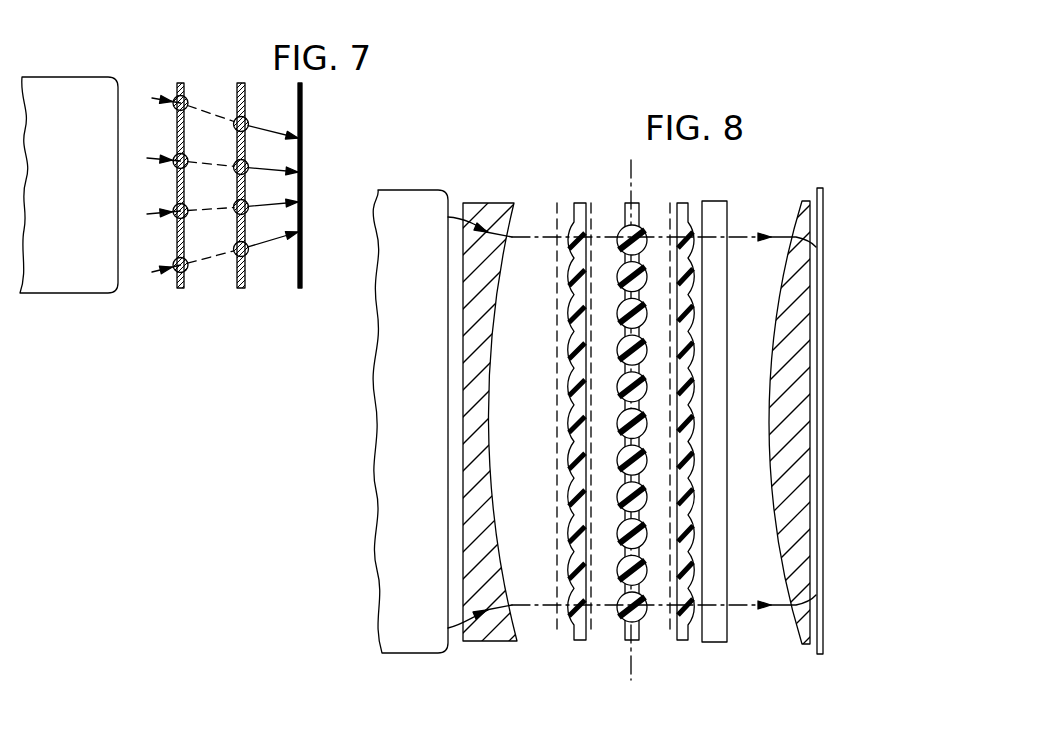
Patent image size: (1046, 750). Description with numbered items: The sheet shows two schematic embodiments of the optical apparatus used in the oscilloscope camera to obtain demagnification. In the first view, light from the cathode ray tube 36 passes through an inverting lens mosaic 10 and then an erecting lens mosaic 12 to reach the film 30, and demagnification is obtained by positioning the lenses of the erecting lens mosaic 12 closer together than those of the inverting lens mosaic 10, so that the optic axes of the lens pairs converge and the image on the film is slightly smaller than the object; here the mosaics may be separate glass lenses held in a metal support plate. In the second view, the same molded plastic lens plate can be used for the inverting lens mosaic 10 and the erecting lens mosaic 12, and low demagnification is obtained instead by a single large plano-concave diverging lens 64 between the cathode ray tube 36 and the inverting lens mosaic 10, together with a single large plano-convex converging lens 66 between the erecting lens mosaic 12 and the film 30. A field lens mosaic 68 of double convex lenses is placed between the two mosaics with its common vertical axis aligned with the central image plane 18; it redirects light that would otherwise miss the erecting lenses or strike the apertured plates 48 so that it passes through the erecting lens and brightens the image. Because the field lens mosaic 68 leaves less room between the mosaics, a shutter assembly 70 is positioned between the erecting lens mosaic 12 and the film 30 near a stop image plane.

In FIG. 7, the inverting lens mosaic 10 is at (181, 83).
In FIG. 8, the inverting lens mosaic 10 is at (579, 204).
In FIG. 7, the erecting lens mosaic 12 is at (240, 83).
In FIG. 8, the erecting lens mosaic 12 is at (680, 204).
In FIG. 8, the central image plane 18 is at (631, 184).
In FIG. 7, the film 30 is at (302, 111).
In FIG. 8, the film 30 is at (824, 297).
In FIG. 7, the cathode ray tube 36 is at (97, 293).
In FIG. 8, the cathode ray tube 36 is at (424, 657).
In FIG. 8, the apertured metal plates 48 is at (557, 632).
In FIG. 8, the diverging lens 64 is at (494, 204).
In FIG. 8, the converging lens 66 is at (778, 296).
In FIG. 8, the field lens mosaic 68 is at (637, 204).
In FIG. 8, the shutter assembly 70 is at (726, 201).